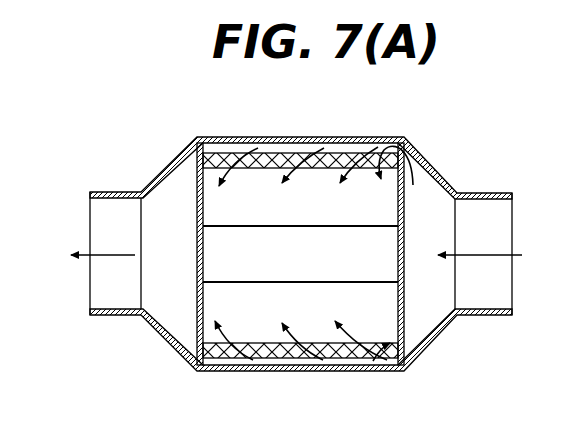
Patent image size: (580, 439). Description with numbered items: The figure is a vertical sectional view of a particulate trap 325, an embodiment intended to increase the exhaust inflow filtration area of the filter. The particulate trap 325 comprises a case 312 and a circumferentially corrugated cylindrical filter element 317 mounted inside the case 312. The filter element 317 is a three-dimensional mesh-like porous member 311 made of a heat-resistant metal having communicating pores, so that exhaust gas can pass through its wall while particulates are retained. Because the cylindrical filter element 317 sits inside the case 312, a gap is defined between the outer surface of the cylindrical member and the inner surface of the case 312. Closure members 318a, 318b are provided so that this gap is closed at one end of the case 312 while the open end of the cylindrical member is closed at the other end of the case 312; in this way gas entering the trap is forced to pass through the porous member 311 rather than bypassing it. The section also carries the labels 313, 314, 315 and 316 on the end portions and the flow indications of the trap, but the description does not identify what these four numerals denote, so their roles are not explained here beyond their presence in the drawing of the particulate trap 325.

The three-dimensional mesh-like porous member 311 is at (285, 357).
The case 312 is at (449, 168).
The inlet pipe 313 is at (491, 278).
The outlet pipe 314 is at (115, 290).
The exhaust gas inflow 315 is at (500, 255).
The exhaust gas outflow 316 is at (80, 255).
The circumferentially corrugated cylindrical filter element 317 is at (412, 183).
The closure member 318a is at (182, 353).
The closure member 318b is at (402, 315).
The particulate trap 325 is at (415, 278).